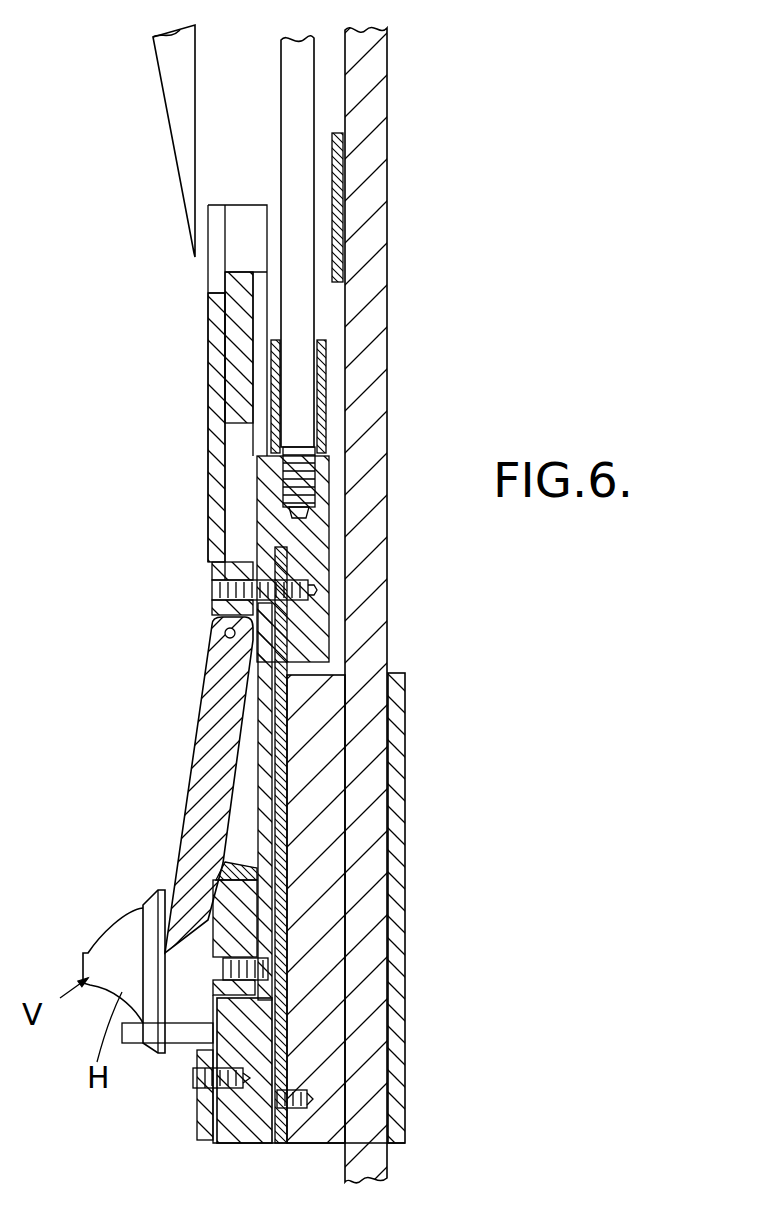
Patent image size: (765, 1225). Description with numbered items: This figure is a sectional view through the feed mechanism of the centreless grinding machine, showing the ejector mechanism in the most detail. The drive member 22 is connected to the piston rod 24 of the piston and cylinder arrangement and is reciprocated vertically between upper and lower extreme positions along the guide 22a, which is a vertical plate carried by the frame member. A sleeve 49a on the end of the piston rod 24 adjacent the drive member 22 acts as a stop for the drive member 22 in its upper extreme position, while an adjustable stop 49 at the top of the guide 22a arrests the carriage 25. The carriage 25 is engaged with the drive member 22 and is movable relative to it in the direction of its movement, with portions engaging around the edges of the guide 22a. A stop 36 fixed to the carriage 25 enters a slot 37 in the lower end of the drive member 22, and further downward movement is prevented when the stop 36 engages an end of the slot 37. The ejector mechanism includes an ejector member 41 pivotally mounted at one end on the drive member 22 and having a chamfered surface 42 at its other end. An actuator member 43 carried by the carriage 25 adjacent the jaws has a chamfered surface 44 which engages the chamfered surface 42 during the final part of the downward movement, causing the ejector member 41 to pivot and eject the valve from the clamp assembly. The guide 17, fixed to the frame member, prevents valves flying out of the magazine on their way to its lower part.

The guide 17 is at (182, 125).
The drive member 22 is at (208, 385).
The guide 22a is at (357, 617).
The piston rod 24 is at (294, 103).
The carriage 25 is at (313, 772).
The stop 36 is at (292, 1100).
The slot 37 is at (280, 1137).
The ejector member 41 is at (208, 748).
The chamfered surface 42 is at (168, 962).
The actuator member 43 is at (240, 930).
The chamfered surface 44 is at (242, 875).
The adjustable stop 49 is at (338, 200).
The sleeve 49a is at (320, 368).